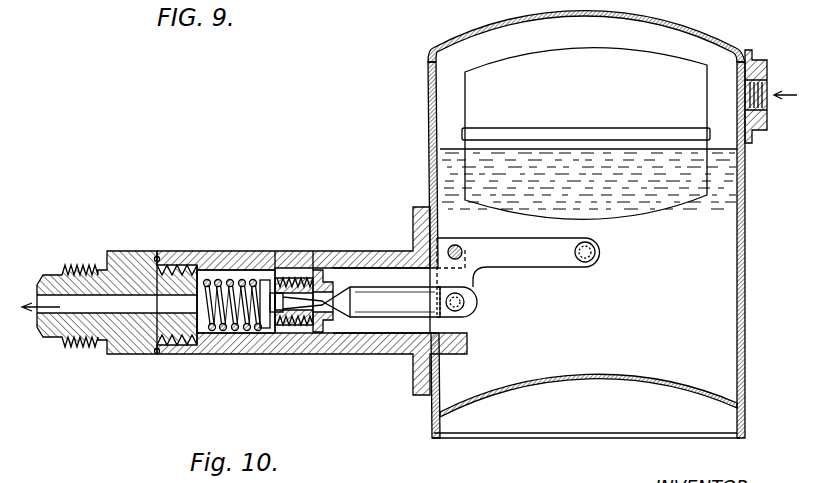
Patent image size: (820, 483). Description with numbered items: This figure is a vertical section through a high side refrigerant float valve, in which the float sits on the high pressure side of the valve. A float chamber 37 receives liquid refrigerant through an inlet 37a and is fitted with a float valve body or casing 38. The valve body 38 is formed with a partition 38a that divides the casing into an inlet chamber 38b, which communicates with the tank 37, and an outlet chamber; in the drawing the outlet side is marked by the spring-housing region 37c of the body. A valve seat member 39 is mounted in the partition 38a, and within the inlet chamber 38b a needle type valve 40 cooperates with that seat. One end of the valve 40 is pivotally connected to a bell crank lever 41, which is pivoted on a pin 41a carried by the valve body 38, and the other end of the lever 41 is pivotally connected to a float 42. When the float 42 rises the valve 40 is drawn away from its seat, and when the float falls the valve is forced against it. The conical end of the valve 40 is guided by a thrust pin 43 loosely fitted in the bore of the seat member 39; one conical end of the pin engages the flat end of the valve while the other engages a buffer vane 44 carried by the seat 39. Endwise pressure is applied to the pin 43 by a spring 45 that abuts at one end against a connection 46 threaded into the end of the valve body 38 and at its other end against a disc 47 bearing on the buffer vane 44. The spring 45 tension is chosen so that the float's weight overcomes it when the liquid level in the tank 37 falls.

The float chamber 37 is at (428, 110).
The inlet 37a is at (768, 92).
The spring chamber 37c is at (210, 276).
The float valve body 38 is at (230, 250).
The partition 38a is at (289, 270).
The inlet chamber 38b is at (372, 282).
The valve seat member 39 is at (323, 272).
The needle type valve 40 is at (380, 318).
The bell crank lever 41 is at (550, 268).
The pin 41a is at (456, 245).
The float 42 is at (672, 200).
The thrust pin 43 is at (308, 328).
The buffer vane 44 is at (279, 272).
The spring 45 is at (226, 331).
The connection 46 is at (115, 356).
The disc 47 is at (268, 330).